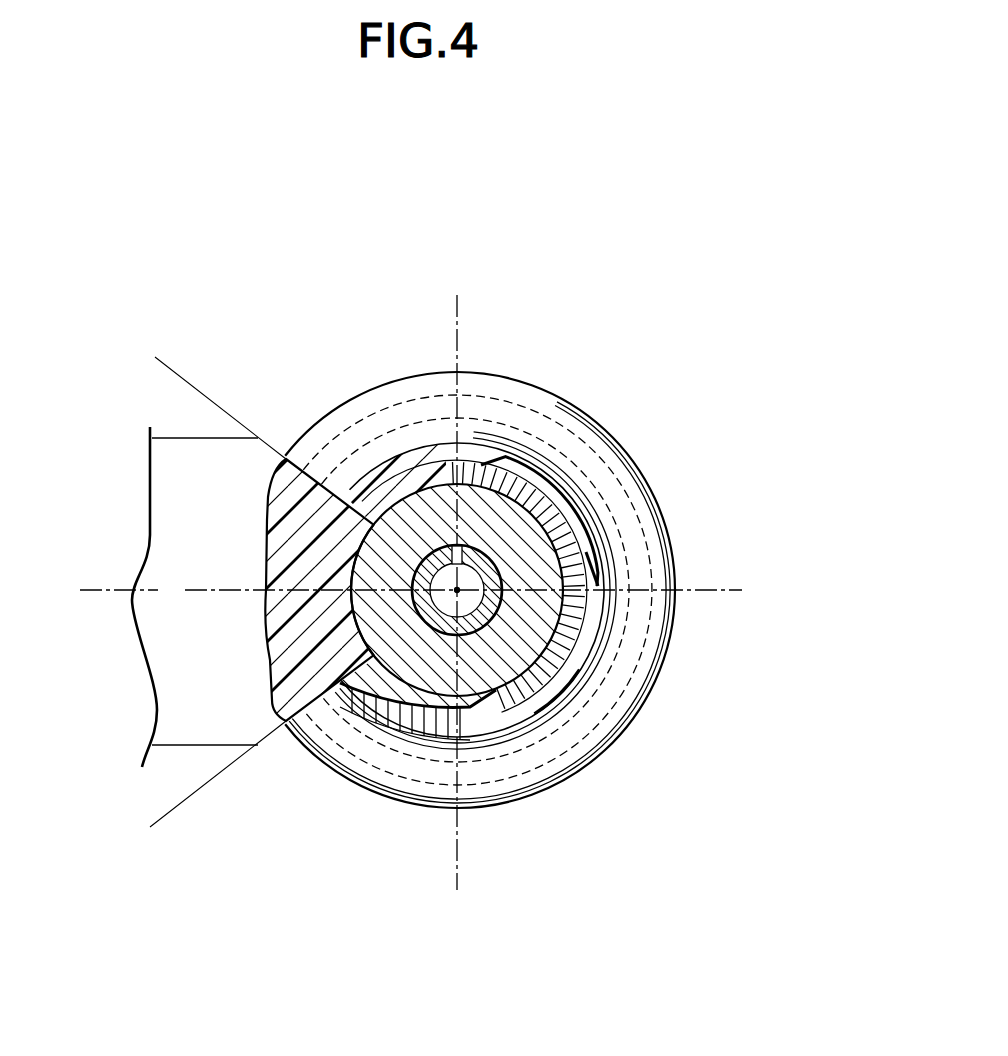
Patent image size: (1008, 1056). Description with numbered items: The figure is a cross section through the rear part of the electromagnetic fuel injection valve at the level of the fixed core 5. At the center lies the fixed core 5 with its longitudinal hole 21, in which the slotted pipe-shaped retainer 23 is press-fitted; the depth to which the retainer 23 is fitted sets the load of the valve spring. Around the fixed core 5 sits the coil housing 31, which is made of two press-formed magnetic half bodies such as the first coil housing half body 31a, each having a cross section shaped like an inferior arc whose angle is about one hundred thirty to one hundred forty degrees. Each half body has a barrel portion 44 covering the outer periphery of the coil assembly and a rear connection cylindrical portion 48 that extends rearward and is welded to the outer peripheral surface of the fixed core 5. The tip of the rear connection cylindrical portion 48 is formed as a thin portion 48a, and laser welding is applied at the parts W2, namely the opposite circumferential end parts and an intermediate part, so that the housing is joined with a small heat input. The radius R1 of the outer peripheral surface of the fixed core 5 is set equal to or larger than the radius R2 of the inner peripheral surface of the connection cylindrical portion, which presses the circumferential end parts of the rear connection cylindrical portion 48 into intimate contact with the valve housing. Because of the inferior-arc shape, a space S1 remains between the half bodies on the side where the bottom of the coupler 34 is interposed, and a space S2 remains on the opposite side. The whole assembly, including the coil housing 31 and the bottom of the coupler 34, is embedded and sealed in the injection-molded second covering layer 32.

The fixed core 5 is at (519, 585).
The longitudinal hole 21 is at (457, 590).
The retainer 23 is at (480, 603).
The coil housing 31 is at (418, 412).
The first coil housing half body 31a is at (390, 808).
The second covering layer 32 is at (464, 455).
The coupler 34 is at (165, 477).
The barrel portion 44 is at (508, 410).
The rear connection cylindrical portion 48 is at (550, 508).
The thin portion 48a is at (575, 560).
The radius of the outer peripheral surface of the fixed core R1 is at (457, 590).
The radius of the inner peripheral surface of the connection cylindrical portions R2 is at (457, 590).
The space S1 is at (227, 417).
The space S2 is at (457, 590).
The laser welding part W2 is at (383, 527).